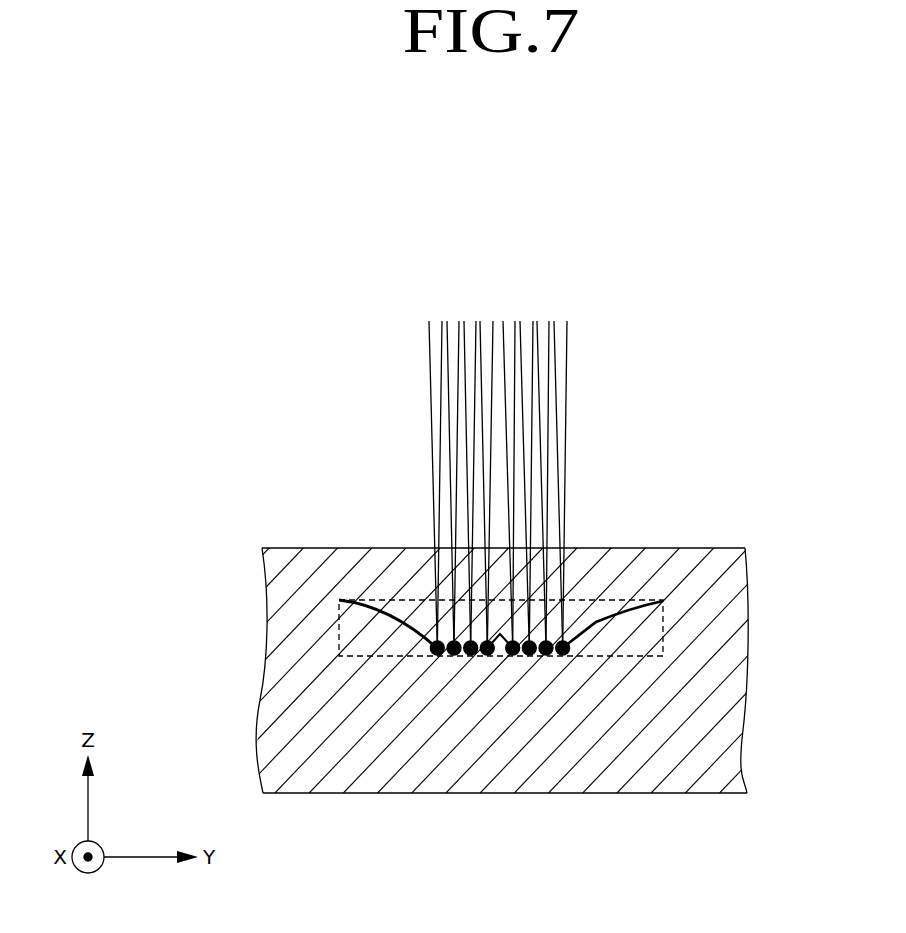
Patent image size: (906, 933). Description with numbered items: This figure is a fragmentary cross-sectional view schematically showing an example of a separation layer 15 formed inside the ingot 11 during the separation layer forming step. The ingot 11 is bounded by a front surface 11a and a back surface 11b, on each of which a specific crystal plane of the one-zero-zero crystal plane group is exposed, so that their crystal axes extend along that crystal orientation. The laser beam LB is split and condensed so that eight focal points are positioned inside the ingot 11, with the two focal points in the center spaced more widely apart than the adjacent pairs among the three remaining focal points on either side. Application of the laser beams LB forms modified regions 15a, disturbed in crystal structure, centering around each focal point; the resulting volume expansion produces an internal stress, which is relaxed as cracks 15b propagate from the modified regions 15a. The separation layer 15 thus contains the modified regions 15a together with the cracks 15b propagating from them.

The ingot 11 is at (305, 506).
The front surface 11a is at (705, 548).
The back surface 11b is at (708, 793).
The separation layer 15 is at (593, 600).
The modified regions 15a is at (472, 658).
The cracks 15b is at (500, 634).
The laser beam LB is at (593, 306).